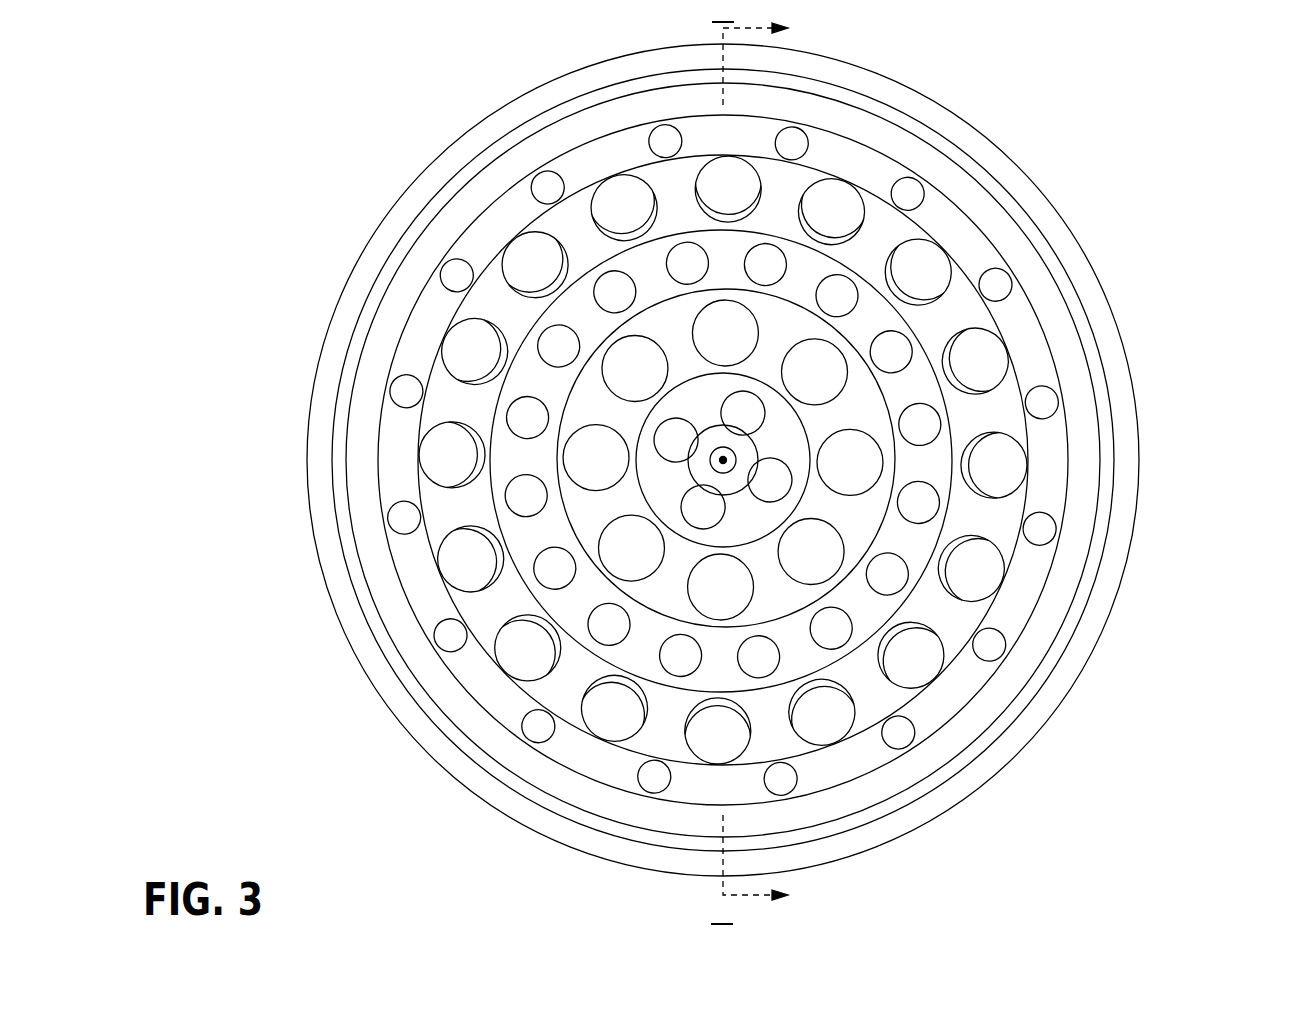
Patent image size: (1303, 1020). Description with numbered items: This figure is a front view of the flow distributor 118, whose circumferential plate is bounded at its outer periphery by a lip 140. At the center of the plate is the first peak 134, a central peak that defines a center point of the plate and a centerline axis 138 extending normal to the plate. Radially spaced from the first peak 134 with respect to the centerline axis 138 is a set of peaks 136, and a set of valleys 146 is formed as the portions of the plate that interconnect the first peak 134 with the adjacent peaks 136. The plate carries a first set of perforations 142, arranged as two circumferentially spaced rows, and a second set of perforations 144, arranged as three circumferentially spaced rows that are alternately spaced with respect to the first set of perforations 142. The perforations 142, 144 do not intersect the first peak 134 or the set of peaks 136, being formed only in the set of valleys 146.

The flow distributor 118 is at (1207, 118).
The first peak 134 is at (735, 460).
The set of peaks 136 is at (888, 495).
The centerline axis 138 is at (737, 447).
The lip 140 is at (972, 752).
The first set of perforations 142 is at (865, 203).
The second set of perforations 144 is at (607, 283).
The set of valleys 146 is at (758, 383).